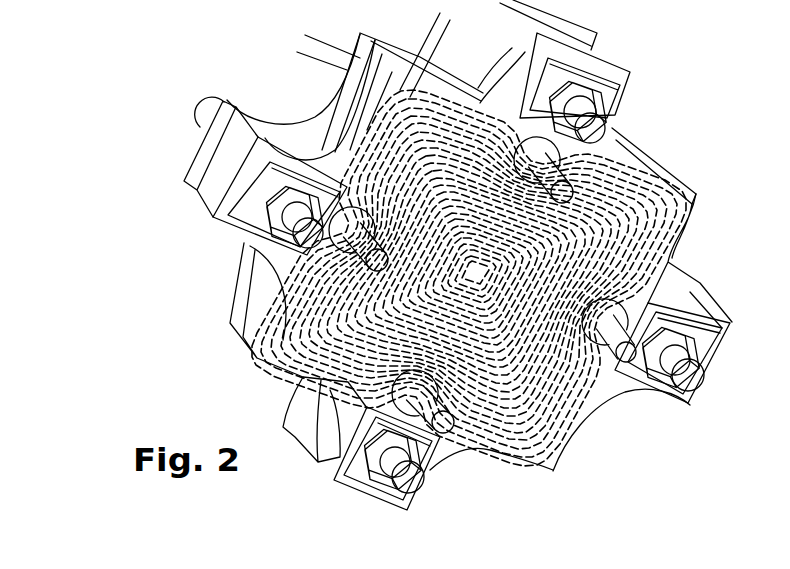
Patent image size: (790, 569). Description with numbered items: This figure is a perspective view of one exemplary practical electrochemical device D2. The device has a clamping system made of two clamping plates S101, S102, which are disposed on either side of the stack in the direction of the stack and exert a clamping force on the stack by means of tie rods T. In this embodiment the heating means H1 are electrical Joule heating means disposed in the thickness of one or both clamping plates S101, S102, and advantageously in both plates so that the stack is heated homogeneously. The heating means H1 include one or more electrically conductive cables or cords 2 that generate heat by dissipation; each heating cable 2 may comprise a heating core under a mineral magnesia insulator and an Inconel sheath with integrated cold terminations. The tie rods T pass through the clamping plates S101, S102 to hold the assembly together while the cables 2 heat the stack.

The electrically conductive cable 2 is at (630, 262).
The tie rod T is at (580, 110).
The heating means H1 is at (634, 208).
The clamping plate S101 is at (293, 115).
The clamping plate S102 is at (613, 387).
The electrochemical device D2 is at (140, 139).